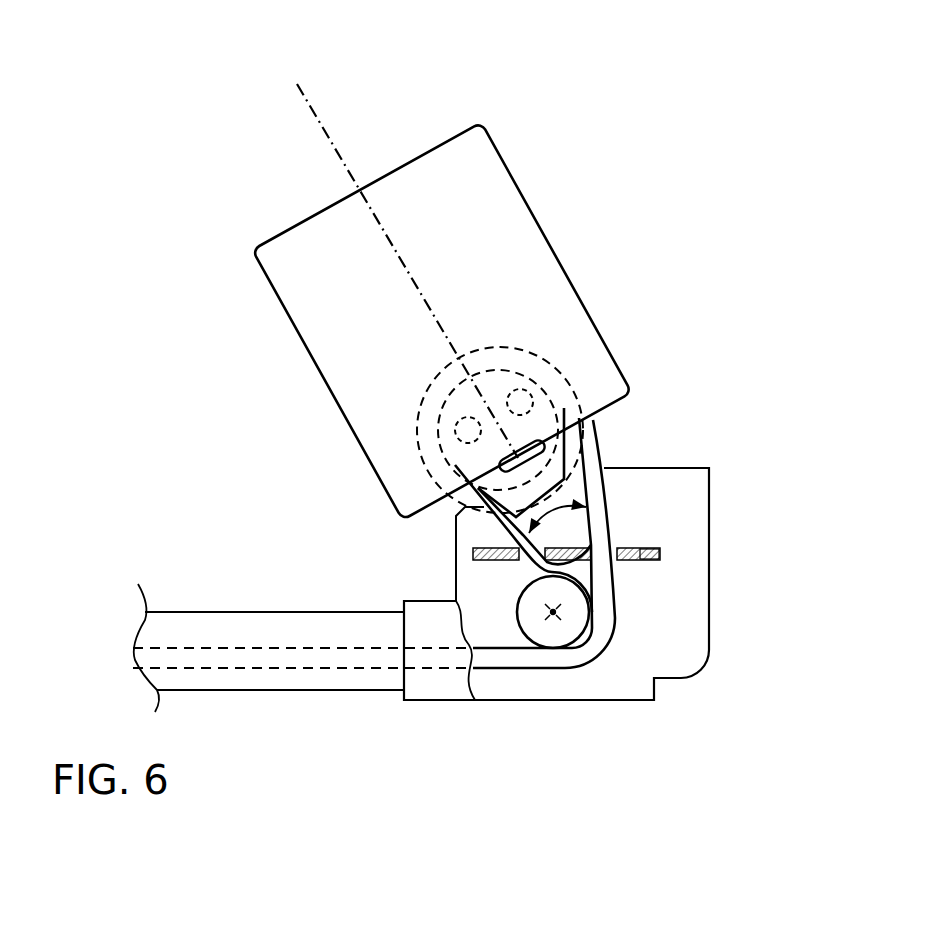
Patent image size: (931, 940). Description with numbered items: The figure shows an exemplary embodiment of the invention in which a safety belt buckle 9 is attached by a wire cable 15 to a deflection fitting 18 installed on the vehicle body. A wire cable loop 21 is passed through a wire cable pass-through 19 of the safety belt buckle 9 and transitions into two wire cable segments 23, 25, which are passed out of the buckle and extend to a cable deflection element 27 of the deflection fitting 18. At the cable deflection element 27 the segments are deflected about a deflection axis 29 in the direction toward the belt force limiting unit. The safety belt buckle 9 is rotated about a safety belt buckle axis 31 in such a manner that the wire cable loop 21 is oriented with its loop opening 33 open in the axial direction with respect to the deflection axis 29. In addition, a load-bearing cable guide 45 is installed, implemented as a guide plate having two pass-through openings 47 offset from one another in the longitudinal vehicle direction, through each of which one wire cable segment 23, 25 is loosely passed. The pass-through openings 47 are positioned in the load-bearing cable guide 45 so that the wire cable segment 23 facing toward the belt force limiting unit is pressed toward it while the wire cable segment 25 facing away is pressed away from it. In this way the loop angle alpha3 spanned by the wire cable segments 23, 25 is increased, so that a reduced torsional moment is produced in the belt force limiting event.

The safety belt buckle 9 is at (422, 162).
The safety belt buckle axis 31 is at (316, 117).
The loop opening 33 is at (443, 410).
The wire cable loop 21 is at (422, 455).
The wire cable segment 23 is at (497, 522).
The wire cable segment 25 is at (590, 538).
The wire cable 15 is at (213, 435).
The wire cable pass-through 19 is at (609, 534).
The cable deflection element 27 is at (612, 636).
The deflection axis 29 is at (553, 612).
The deflection fitting 18 is at (709, 588).
The pass-through openings 47 is at (518, 557).
The load-bearing cable guide 45 is at (652, 552).
The loop angle alpha3 is at (549, 512).